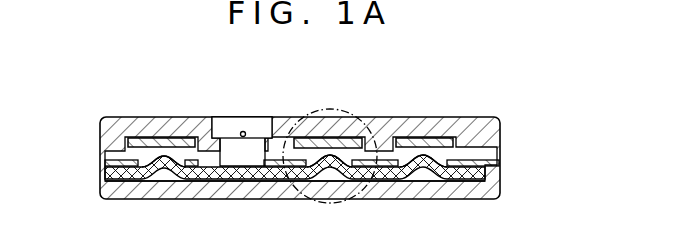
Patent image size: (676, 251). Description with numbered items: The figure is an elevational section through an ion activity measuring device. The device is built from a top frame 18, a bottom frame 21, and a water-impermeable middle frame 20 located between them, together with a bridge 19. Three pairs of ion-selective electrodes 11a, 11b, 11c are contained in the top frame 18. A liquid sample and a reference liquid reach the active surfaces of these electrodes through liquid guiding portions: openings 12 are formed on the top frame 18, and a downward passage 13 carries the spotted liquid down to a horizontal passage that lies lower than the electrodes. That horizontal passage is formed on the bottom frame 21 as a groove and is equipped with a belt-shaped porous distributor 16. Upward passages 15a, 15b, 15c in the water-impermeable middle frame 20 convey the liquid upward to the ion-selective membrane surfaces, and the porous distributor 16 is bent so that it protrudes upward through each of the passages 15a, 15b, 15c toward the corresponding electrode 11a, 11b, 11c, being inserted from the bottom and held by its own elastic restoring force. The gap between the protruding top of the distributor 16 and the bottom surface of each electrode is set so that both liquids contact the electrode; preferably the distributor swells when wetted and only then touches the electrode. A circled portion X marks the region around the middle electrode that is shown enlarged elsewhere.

The top frame 18 is at (113, 121).
The bottom frame 21 is at (108, 203).
The porous distributor 16 is at (462, 172).
The upward passage 15a is at (163, 163).
The upward passage 15b is at (322, 166).
The upward passage 15c is at (422, 168).
The water-impermeable middle frame 20 is at (107, 164).
The ion-selective electrode 11a is at (163, 137).
The ion-selective electrode 11b is at (363, 138).
The ion-selective electrode 11c is at (427, 138).
The opening 12 is at (264, 123).
The downward passage 13 is at (230, 152).
The bridge 19 is at (243, 131).
The portion X is at (340, 109).